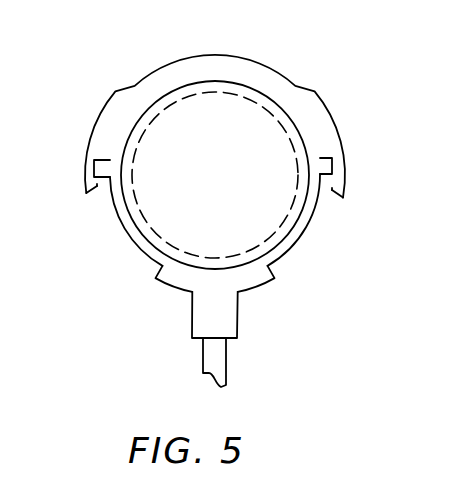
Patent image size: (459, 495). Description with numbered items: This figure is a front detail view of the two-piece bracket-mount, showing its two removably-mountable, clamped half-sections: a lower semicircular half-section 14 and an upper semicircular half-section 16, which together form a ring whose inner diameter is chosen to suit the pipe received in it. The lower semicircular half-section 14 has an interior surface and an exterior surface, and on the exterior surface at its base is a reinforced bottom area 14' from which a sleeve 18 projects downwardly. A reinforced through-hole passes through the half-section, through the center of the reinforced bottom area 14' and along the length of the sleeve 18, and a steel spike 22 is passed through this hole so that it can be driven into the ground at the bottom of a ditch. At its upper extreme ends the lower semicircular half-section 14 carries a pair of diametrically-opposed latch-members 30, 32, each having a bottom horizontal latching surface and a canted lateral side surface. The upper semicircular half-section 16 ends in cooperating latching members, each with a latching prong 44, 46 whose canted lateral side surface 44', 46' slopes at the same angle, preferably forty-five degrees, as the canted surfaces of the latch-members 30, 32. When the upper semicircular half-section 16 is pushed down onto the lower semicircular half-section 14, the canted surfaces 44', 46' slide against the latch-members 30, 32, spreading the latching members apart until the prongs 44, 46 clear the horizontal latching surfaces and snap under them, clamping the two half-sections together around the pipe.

The upper semicircular half-section 16 is at (266, 75).
The lower semicircular half-section 14 is at (225, 193).
The reinforced bottom area 14' is at (201, 311).
The sleeve 18 is at (226, 317).
The steel spike 22 is at (218, 366).
The latch-member 30 is at (106, 161).
The latch-member 32 is at (325, 157).
The latching prong 44 is at (66, 206).
The canted lateral side surface 44' is at (86, 232).
The latching prong 46 is at (373, 181).
The canted lateral side surface 46' is at (355, 222).